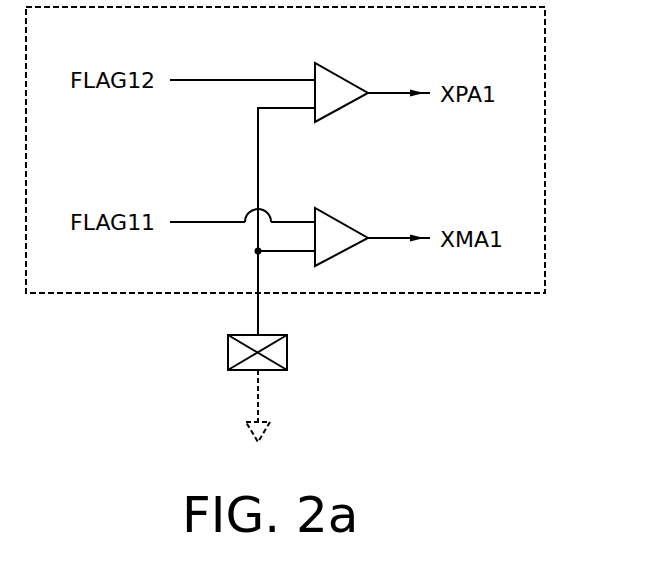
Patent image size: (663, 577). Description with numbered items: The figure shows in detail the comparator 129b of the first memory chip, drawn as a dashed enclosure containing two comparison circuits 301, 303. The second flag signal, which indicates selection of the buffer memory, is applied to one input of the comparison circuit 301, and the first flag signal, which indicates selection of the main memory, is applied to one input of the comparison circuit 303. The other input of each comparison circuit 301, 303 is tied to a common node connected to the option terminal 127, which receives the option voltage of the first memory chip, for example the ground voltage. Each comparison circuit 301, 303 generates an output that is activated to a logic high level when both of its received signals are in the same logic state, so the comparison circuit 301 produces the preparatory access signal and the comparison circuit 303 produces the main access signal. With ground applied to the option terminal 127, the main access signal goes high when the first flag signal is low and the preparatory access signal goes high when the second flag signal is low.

The comparator 129b is at (545, 83).
The comparison circuit 301 is at (337, 74).
The comparison circuit 303 is at (337, 218).
The option terminal 127 is at (288, 352).